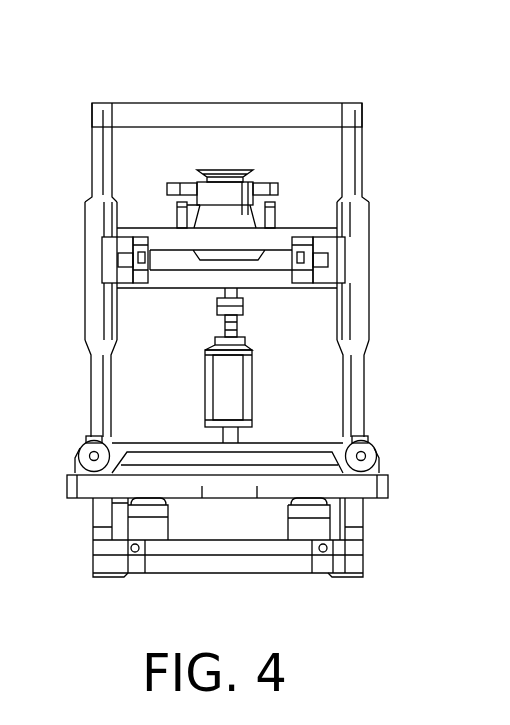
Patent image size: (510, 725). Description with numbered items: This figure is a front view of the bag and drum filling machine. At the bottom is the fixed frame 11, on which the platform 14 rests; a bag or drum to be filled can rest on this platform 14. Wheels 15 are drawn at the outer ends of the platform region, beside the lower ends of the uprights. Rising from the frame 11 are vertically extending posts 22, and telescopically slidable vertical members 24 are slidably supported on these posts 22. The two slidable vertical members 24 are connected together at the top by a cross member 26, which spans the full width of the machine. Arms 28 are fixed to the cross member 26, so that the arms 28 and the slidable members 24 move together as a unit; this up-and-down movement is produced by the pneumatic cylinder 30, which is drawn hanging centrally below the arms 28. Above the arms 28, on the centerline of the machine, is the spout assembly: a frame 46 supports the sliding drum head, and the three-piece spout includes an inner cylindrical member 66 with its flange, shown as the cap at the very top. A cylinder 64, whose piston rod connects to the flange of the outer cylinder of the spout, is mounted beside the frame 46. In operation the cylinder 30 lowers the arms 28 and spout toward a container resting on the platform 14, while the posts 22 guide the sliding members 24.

The fixed frame 11 is at (103, 560).
The platform 14 is at (67, 488).
The wheels 15 is at (82, 446).
The vertically extending posts 22 is at (361, 163).
The telescopically slidable vertical members 24 is at (117, 322).
The cross member 26 is at (193, 104).
The arms 28 is at (124, 262).
The pneumatic cylinder 30 is at (253, 398).
The frame 46 is at (270, 183).
The cylinder 64 is at (176, 212).
The inner cylindrical member 66 is at (223, 169).